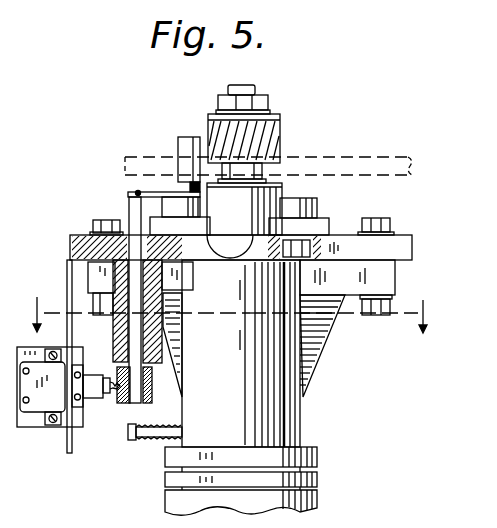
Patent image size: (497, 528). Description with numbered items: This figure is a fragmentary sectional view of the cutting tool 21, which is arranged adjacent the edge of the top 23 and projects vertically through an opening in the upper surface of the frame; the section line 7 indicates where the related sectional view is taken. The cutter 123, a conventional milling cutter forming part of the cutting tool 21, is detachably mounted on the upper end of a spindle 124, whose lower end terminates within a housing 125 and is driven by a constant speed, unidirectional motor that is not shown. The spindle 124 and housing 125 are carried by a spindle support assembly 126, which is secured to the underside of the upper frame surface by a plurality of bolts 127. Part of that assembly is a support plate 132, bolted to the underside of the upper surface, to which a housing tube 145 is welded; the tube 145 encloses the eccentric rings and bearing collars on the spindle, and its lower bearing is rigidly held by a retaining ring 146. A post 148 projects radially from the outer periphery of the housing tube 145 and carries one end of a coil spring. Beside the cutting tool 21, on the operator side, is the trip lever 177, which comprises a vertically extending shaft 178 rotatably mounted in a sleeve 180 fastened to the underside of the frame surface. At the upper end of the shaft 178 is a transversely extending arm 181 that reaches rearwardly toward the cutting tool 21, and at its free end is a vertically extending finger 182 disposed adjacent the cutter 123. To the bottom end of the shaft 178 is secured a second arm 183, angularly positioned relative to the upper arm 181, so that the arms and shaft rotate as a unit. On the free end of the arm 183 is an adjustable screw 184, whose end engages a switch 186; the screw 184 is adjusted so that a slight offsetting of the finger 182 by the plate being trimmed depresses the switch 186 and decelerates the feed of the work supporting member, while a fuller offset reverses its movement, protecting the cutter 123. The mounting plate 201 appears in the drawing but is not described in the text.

The section line 7- 7 is at (234, 315).
The cutting tool 21 is at (286, 91).
The top 23 is at (385, 154).
The cutter 123 is at (281, 120).
The spindle 124 is at (282, 190).
The housing 125 is at (317, 500).
The spindle support assembly 126 is at (321, 360).
The bolts 127 is at (95, 220).
The support plate 132 is at (385, 275).
The housing tube 145 is at (305, 429).
The retaining ring 146 is at (317, 475).
The post 148 is at (147, 436).
The trip lever 177 is at (122, 189).
The shaft 178 is at (130, 200).
The sleeve 180 is at (120, 280).
The arm 181 is at (153, 190).
The finger 182 is at (186, 137).
The second arm 183 is at (127, 403).
The adjustable screw 184 is at (113, 380).
The switch 186 is at (97, 398).
The mounting plate 201 is at (404, 247).